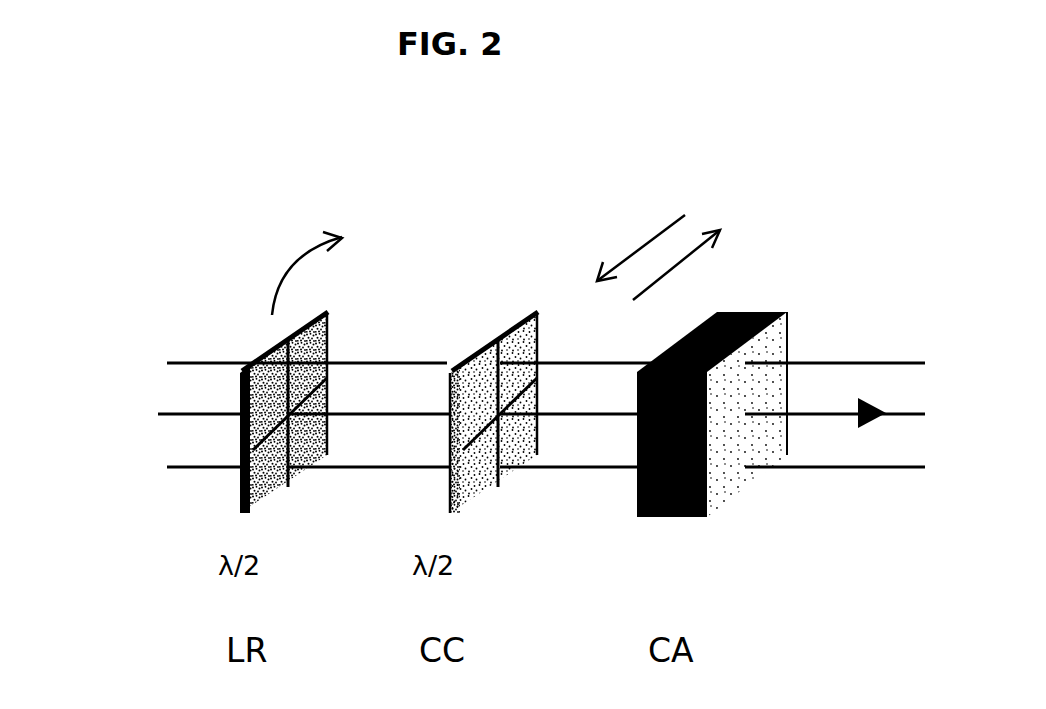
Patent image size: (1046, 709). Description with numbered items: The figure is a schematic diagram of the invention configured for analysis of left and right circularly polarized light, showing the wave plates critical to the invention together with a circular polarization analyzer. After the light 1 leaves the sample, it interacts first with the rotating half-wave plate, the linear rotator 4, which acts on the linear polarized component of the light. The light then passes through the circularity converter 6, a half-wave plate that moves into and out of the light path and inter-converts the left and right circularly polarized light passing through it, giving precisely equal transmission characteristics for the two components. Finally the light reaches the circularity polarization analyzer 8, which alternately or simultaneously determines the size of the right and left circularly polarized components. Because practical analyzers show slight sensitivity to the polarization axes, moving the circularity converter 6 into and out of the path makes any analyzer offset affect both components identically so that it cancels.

The light 1 is at (499, 325).
The linear rotator 4 is at (325, 303).
The circularity converter 6 is at (536, 303).
The circularity polarization analyzer 8 is at (732, 303).